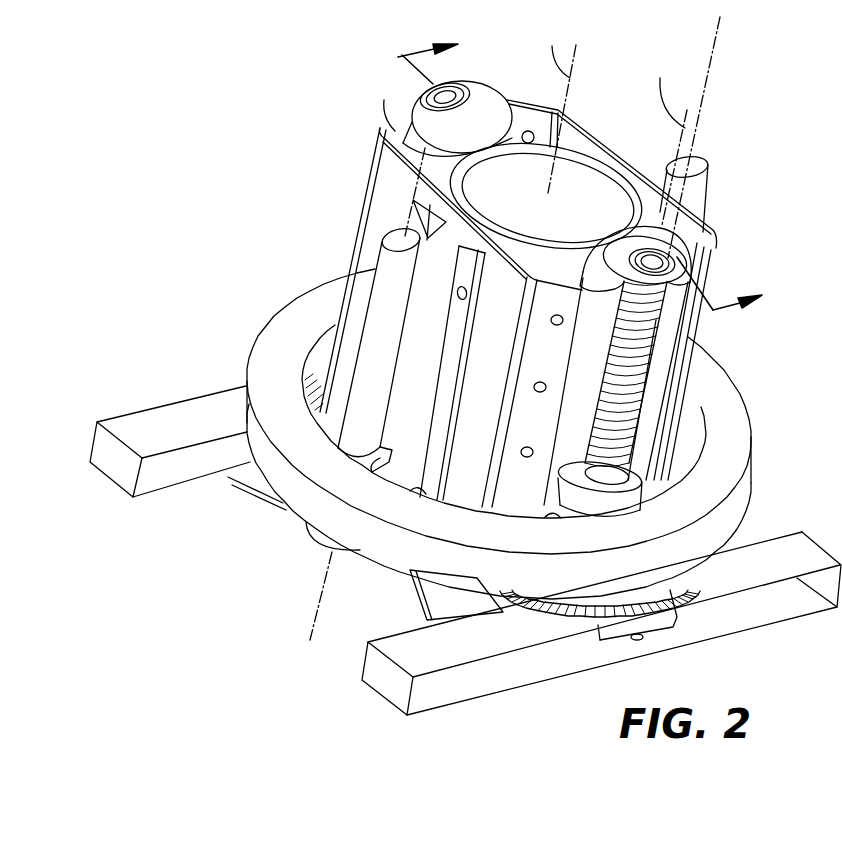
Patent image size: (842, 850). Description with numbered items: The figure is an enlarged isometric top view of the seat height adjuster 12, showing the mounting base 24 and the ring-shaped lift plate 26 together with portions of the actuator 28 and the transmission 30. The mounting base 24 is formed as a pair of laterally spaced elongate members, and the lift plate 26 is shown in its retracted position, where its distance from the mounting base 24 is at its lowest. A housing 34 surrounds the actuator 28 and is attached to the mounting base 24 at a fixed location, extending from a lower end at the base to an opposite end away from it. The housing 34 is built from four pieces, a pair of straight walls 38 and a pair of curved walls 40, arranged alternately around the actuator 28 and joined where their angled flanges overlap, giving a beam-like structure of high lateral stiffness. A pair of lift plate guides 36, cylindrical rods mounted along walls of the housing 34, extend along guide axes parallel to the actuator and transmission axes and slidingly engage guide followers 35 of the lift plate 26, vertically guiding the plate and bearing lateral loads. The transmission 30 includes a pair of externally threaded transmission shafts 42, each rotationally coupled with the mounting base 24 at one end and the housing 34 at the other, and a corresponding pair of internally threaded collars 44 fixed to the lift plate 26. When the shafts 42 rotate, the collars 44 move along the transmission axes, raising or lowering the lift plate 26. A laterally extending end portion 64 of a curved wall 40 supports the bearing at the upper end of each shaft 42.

The seat height adjuster 12 is at (232, 150).
The mounting base 24 is at (110, 455).
The lift plate 26 is at (262, 330).
The actuator 28 is at (597, 180).
The transmission 30 is at (655, 355).
The housing 34 is at (521, 104).
The guide follower 35 is at (384, 448).
The lift plate guide 36 is at (378, 299).
The straight wall 38 is at (372, 207).
The curved wall 40 is at (703, 292).
The transmission shaft 42 is at (625, 392).
The collar 44 is at (585, 465).
The laterally extending end portion 64 is at (673, 258).